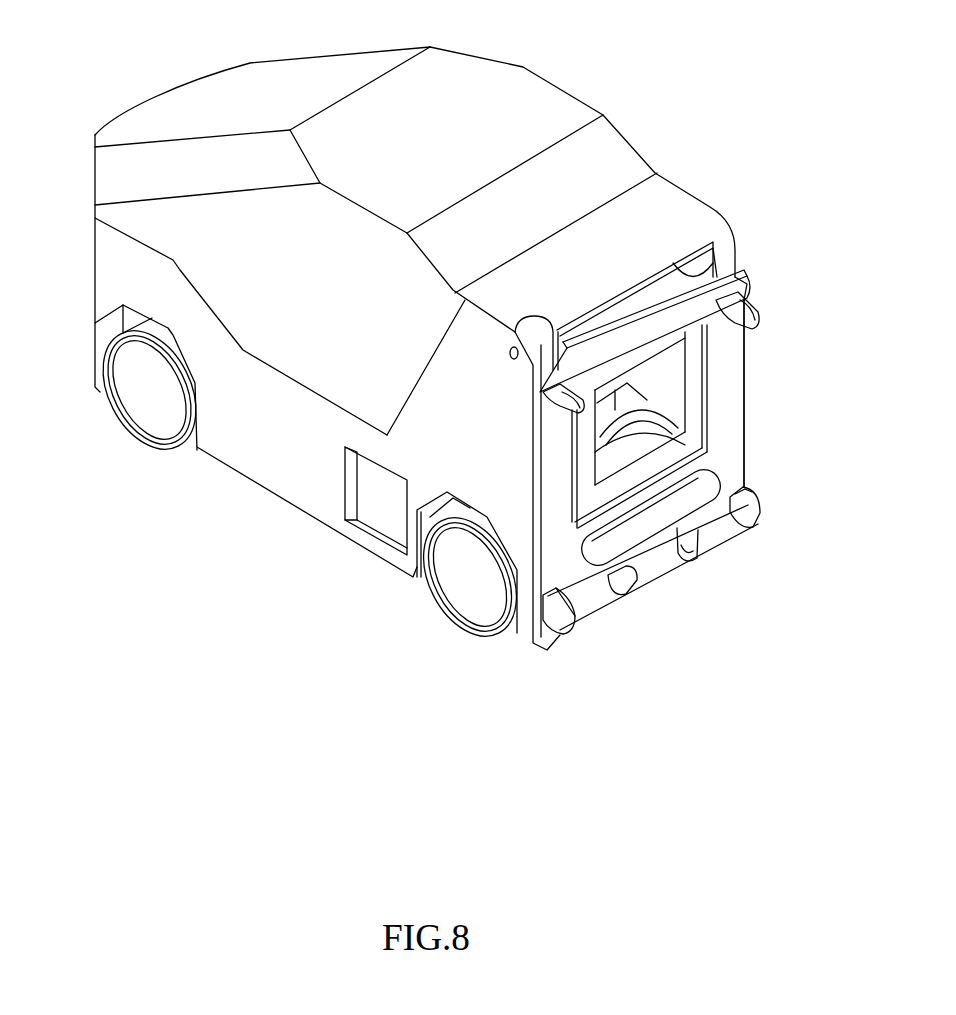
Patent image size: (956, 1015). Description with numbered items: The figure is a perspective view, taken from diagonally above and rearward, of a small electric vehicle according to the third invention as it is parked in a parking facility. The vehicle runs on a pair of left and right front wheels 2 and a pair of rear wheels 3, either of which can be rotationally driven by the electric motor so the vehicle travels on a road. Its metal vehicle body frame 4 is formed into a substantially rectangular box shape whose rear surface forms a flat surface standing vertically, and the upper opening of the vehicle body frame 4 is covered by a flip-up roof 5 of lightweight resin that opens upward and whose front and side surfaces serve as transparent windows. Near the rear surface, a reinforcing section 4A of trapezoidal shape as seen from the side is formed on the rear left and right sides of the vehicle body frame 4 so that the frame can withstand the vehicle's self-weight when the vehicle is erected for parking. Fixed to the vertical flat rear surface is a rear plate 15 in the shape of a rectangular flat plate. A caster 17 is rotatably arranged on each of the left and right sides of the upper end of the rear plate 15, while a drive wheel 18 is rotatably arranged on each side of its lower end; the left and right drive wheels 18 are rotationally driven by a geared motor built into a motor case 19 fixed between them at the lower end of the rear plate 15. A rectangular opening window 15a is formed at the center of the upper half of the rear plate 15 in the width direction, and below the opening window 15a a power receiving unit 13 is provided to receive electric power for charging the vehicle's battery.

The front wheels 2 is at (132, 400).
The rear wheels 3 is at (458, 598).
The vehicle body frame 4 is at (265, 467).
The reinforcing section 4A is at (438, 398).
The roof 5 is at (289, 84).
The power receiving unit 13 is at (690, 508).
The rear plate 15 is at (727, 417).
The opening window 15a is at (680, 417).
The caster 17 is at (753, 325).
The drive wheel 18 is at (757, 528).
The motor case 19 is at (658, 567).